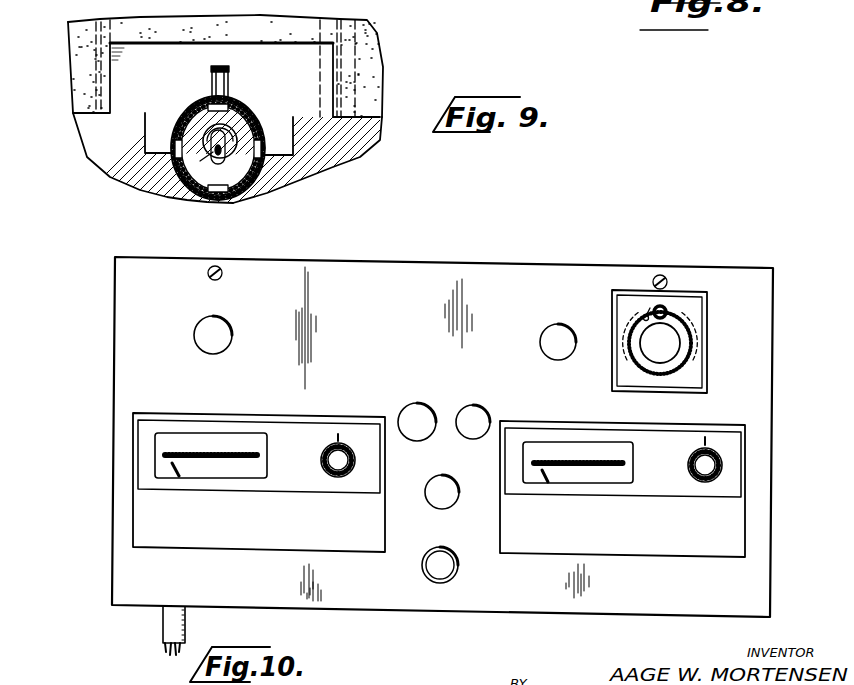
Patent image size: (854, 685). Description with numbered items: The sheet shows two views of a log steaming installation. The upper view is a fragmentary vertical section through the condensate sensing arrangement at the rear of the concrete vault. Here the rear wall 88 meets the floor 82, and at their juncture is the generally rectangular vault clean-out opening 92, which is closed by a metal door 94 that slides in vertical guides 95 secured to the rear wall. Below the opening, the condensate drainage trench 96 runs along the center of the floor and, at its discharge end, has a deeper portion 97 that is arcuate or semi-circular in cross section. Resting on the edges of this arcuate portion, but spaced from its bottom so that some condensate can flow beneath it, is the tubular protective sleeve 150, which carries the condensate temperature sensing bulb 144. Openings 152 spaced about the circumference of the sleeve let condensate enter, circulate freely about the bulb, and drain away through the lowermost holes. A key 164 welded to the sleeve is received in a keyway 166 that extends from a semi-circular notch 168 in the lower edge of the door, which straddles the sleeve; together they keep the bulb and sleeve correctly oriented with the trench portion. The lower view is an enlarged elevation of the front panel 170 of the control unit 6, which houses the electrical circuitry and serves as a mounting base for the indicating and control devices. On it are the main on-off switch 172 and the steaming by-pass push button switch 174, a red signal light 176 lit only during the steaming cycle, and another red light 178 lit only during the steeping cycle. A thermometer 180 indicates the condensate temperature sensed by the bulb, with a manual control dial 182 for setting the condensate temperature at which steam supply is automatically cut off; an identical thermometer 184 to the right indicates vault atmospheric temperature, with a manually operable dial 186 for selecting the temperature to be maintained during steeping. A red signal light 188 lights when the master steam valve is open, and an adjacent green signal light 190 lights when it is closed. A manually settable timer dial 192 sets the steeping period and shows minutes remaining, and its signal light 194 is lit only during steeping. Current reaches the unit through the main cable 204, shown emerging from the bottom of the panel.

In FIG. 10, the control unit 6 is at (462, 430).
In FIG. 9, the floor 82 is at (372, 117).
In FIG. 9, the rear wall 88 is at (375, 58).
In FIG. 9, the vault clean-out opening 92 is at (143, 50).
In FIG. 9, the metal door 94 is at (333, 30).
In FIG. 9, the vertical guides 95 is at (67, 47).
In FIG. 9, the condensate drainage trench 96 is at (290, 127).
In FIG. 9, the deeper portion 97 is at (250, 197).
In FIG. 9, the condensate temperature sensing bulb 144 is at (124, 111).
In FIG. 9, the tubular protective sleeve 150 is at (195, 107).
In FIG. 9, the openings 152 is at (175, 140).
In FIG. 9, the key 164 is at (218, 70).
In FIG. 9, the keyway 166 is at (230, 67).
In FIG. 9, the semi-circular notch 168 is at (240, 103).
In FIG. 10, the front panel 170 is at (764, 367).
In FIG. 10, the main on-off switch 172 is at (443, 502).
In FIG. 10, the steaming by-pass push button switch 174 is at (445, 567).
In FIG. 10, the red signal light 176 is at (213, 325).
In FIG. 10, the red light 178 is at (562, 332).
In FIG. 10, the thermometer 180 is at (197, 443).
In FIG. 10, the manual control dial 182 is at (330, 462).
In FIG. 10, the thermometer 184 is at (595, 447).
In FIG. 10, the manually operable dial 186 is at (687, 477).
In FIG. 10, the red signal light 188 is at (408, 417).
In FIG. 10, the green signal light 190 is at (483, 413).
In FIG. 10, the timer dial 192 is at (655, 302).
In FIG. 10, the signal light 194 is at (691, 345).
In FIG. 10, the main cable 204 is at (165, 632).